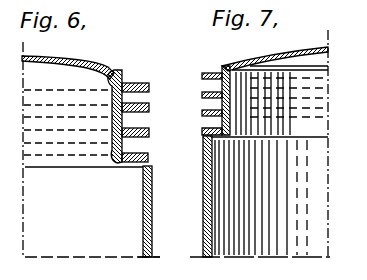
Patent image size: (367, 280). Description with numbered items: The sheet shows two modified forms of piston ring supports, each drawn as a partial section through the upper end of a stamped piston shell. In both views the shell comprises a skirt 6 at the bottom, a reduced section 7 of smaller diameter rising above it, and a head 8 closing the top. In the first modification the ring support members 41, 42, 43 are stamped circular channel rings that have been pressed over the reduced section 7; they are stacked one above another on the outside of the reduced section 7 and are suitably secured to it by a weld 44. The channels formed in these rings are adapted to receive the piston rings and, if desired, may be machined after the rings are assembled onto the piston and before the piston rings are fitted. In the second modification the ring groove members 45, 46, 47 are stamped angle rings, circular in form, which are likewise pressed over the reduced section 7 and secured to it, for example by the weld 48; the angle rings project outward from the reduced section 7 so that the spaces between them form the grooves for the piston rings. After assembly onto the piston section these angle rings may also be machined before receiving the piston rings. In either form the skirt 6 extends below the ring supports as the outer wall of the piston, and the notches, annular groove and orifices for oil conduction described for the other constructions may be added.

In FIG. 6, the skirt 6 is at (152, 202).
In FIG. 7, the skirt 6 is at (203, 232).
In FIG. 6, the reduced section 7 is at (116, 72).
In FIG. 7, the reduced section 7 is at (236, 67).
In FIG. 6, the head 8 is at (76, 58).
In FIG. 7, the head 8 is at (300, 52).
In FIG. 6, the ring support member 41 is at (149, 158).
In FIG. 6, the ring support member 42 is at (149, 133).
In FIG. 6, the ring support member 43 is at (149, 108).
In FIG. 6, the weld 44 is at (124, 86).
In FIG. 7, the ring groove member 45 is at (205, 119).
In FIG. 7, the ring groove member 46 is at (203, 96).
In FIG. 7, the ring groove member 47 is at (203, 76).
In FIG. 7, the weld 48 is at (224, 73).